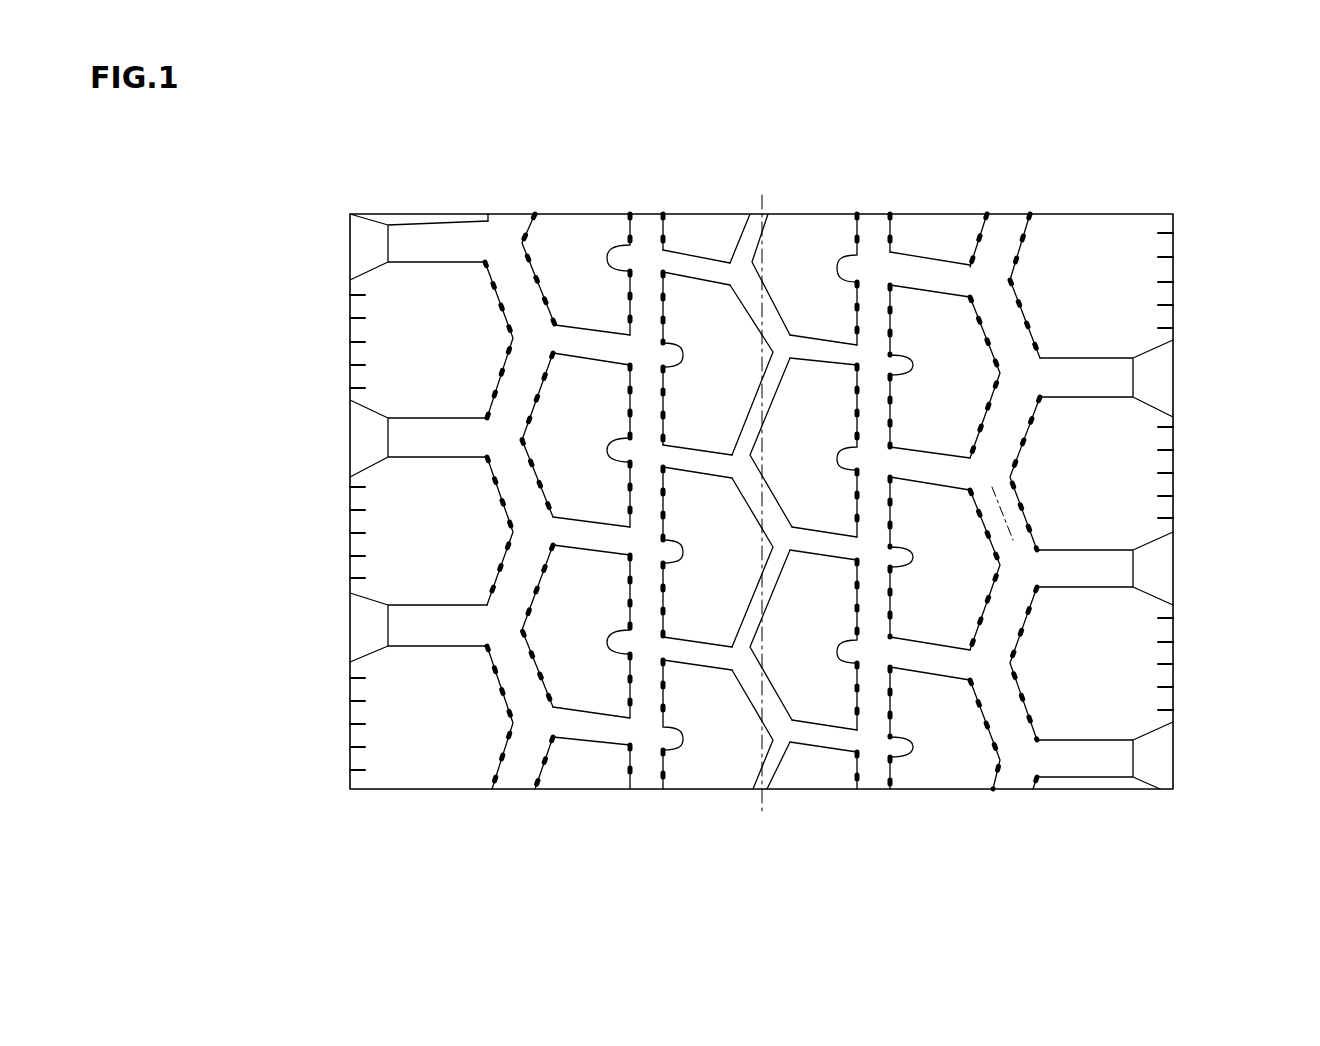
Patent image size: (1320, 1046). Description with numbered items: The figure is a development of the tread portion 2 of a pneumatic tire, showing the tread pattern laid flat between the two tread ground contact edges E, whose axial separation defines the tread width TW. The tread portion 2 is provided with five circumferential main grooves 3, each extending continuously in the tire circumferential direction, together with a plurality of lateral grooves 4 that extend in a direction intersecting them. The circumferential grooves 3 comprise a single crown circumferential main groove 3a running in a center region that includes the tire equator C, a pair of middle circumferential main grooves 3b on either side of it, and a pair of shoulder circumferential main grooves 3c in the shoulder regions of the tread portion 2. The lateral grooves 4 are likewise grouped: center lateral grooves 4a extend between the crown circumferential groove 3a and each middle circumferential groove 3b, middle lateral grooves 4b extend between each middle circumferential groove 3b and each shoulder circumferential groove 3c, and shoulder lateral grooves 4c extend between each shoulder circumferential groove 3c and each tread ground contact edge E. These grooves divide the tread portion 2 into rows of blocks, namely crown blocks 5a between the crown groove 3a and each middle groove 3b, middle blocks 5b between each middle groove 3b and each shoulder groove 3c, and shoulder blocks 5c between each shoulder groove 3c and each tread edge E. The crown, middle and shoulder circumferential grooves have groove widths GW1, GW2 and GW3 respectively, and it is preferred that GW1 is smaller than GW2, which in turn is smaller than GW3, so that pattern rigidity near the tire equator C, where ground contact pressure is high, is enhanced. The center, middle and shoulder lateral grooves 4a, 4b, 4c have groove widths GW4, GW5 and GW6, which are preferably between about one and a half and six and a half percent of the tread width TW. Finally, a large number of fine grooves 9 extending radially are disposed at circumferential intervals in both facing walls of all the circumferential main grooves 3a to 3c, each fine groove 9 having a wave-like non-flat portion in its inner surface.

The tread portion 2 is at (1062, 196).
The circumferential main groove 3 is at (748, 465).
The crown circumferential main groove 3a is at (748, 240).
The middle circumferential main groove 3b is at (643, 238).
The shoulder circumferential main groove 3c is at (514, 242).
The lateral groove 4 is at (747, 541).
The center lateral groove 4a is at (688, 456).
The middle lateral groove 4b is at (607, 737).
The shoulder lateral groove 4c is at (356, 240).
The crown block 5a is at (703, 364).
The middle block 5b is at (570, 422).
The shoulder block 5c is at (400, 524).
The fine groove 9 is at (613, 272).
The tire equator C is at (1050, 525).
The tread ground contact edge E is at (350, 300).
The tread width TW is at (350, 121).
The groove width of crown circumferential groove GW1 is at (730, 533).
The groove width of middle circumferential groove GW2 is at (600, 510).
The groove width of shoulder circumferential groove GW3 is at (468, 498).
The groove width of center lateral groove GW4 is at (833, 397).
The groove width of middle lateral groove GW5 is at (915, 498).
The groove width of shoulder lateral groove GW6 is at (1107, 428).